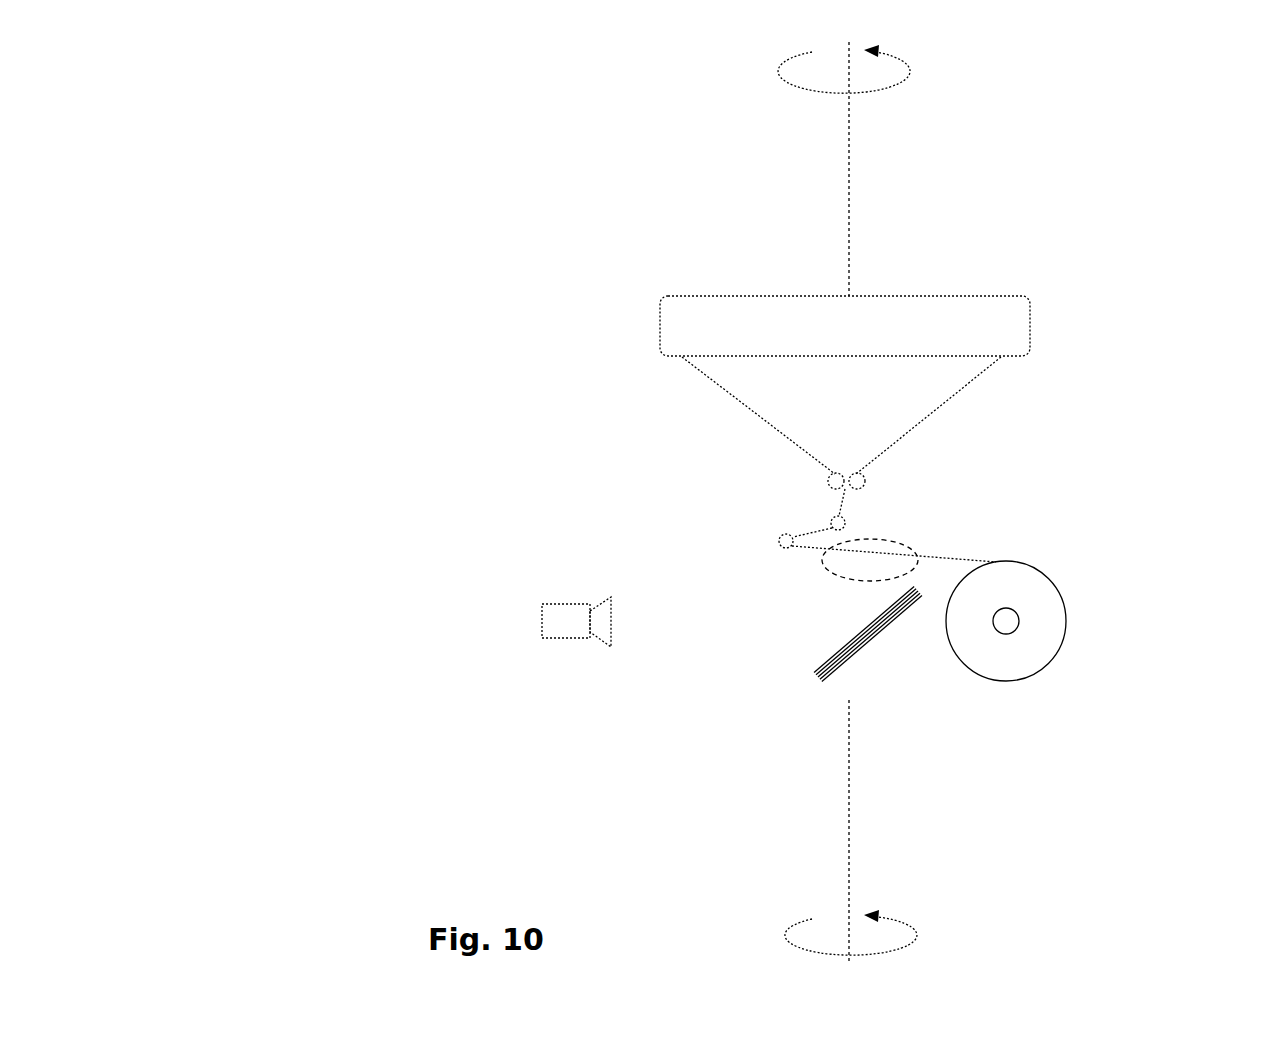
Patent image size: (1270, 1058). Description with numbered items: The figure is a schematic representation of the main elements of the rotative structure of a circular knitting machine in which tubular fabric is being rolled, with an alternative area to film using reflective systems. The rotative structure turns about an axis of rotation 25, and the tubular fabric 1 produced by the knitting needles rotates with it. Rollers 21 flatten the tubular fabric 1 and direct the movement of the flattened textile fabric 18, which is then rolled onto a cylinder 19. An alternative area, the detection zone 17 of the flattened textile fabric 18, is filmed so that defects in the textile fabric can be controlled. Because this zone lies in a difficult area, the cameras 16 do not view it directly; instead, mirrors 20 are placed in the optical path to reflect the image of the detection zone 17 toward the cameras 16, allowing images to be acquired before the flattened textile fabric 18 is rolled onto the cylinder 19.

The axis of rotation 25 is at (858, 179).
The tubular fabric 1 is at (678, 365).
The rollers 21 is at (822, 519).
The detection zone 17 is at (898, 536).
The flattened textile fabric 18 is at (954, 553).
The cylinder 19 is at (1083, 621).
The mirrors 20 is at (875, 665).
The cameras 16 is at (516, 621).